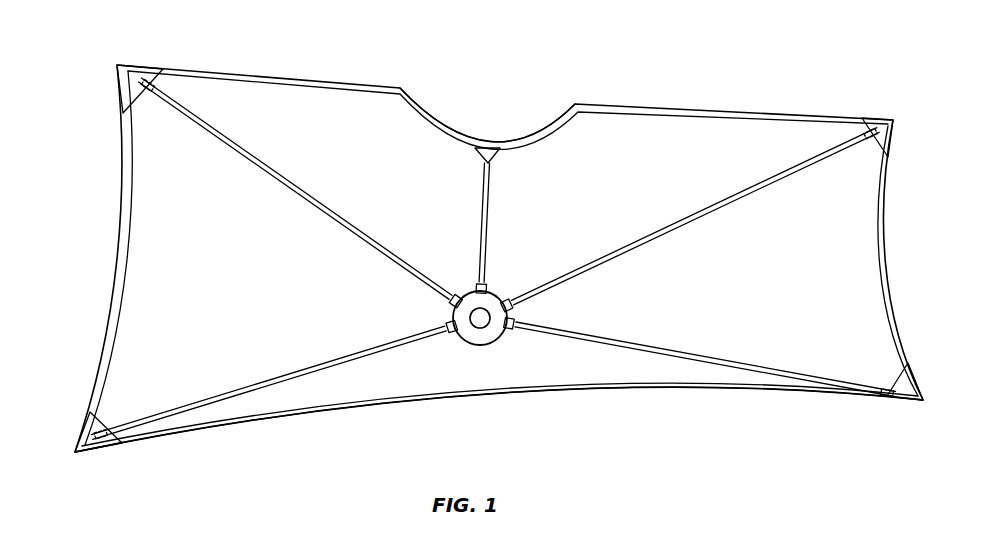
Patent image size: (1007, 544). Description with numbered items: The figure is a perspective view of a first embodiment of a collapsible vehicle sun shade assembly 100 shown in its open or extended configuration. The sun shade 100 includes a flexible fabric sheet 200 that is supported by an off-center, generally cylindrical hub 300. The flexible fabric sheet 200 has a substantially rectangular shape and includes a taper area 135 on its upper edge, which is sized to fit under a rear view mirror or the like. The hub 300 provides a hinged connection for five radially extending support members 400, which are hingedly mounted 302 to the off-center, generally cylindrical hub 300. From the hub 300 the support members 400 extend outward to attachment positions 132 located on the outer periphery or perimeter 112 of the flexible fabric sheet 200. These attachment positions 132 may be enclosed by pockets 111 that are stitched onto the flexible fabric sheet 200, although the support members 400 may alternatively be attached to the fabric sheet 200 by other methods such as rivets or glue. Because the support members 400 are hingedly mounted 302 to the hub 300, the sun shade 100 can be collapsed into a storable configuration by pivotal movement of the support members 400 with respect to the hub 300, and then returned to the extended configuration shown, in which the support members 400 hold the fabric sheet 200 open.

The collapsible vehicle sun shade assembly 100 is at (112, 232).
The pockets 111 is at (128, 72).
The outer periphery or perimeter 112 is at (232, 427).
The attachment positions 132 is at (88, 438).
The taper area 135 is at (441, 121).
The flexible fabric sheet 200 is at (254, 313).
The off-center generally cylindrical hub 300 is at (508, 318).
The hinged mounting 302 is at (508, 334).
The radially extending support members 400 is at (613, 250).